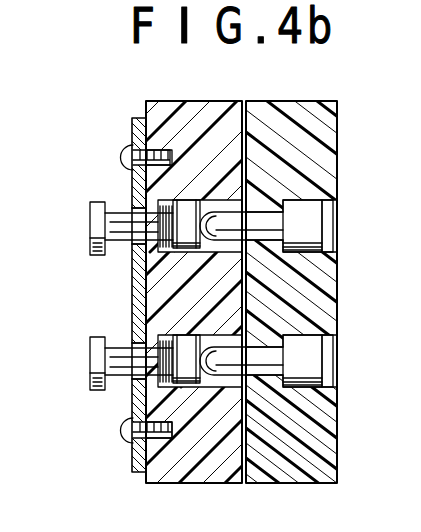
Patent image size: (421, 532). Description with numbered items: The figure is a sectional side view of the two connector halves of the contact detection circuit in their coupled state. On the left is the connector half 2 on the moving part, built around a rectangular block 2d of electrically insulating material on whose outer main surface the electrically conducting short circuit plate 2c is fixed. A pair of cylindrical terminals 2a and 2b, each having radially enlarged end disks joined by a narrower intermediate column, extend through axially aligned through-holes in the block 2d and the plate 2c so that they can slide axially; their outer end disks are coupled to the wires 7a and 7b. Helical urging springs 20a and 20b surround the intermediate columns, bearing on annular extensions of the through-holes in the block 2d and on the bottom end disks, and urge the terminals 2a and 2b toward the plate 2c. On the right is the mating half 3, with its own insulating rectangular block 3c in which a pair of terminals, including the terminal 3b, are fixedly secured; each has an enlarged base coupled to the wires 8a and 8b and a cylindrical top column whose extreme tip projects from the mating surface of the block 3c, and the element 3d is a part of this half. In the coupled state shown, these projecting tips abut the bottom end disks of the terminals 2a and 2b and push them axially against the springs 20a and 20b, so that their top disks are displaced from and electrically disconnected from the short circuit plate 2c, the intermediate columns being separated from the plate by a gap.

The connector half 2 is at (140, 268).
The terminal 2a is at (90, 254).
The terminal 2b is at (91, 347).
The short circuit plate 2c is at (133, 128).
The rectangular block 2d is at (201, 100).
The mating half 3 is at (319, 268).
The terminal 3b is at (322, 350).
The rectangular block 3c is at (262, 100).
The upper nut 3d is at (322, 214).
The wire 7a is at (46, 226).
The wire 7b is at (28, 362).
The wire 8a is at (395, 227).
The wire 8b is at (397, 362).
The helical urging spring 20a is at (160, 212).
The helical urging spring 20b is at (158, 345).